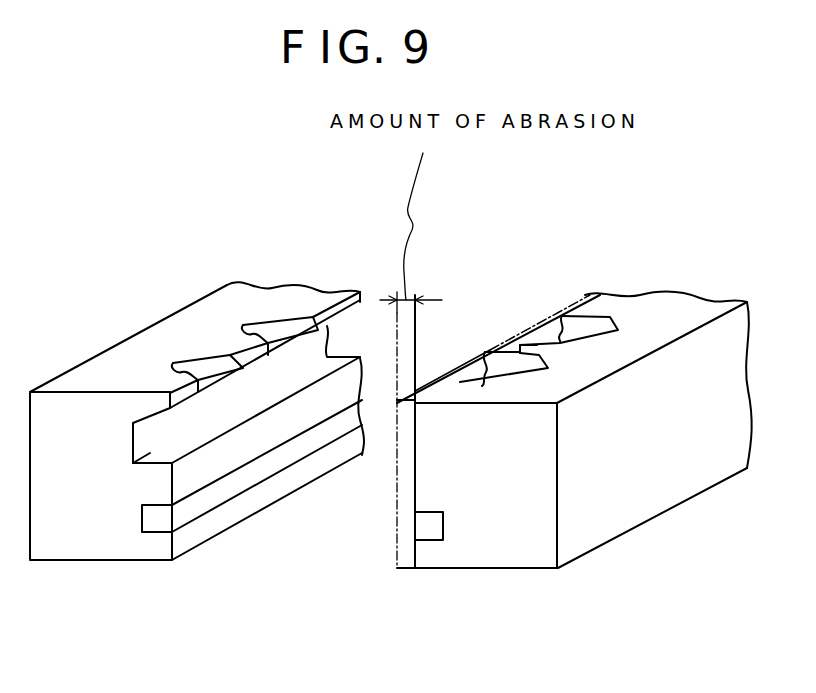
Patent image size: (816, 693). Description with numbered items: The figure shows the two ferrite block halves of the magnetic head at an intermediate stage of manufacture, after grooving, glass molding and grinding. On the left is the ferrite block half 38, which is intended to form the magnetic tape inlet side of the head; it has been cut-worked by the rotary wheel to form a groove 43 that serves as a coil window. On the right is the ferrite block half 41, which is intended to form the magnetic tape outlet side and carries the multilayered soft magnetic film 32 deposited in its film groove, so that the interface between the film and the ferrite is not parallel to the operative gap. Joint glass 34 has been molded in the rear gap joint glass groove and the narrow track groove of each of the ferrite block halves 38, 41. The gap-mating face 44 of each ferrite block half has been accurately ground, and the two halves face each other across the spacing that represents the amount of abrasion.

The multilayered soft magnetic film 32 is at (540, 355).
The joint glass 34 is at (208, 363).
The ferrite block half 38 is at (170, 327).
The ferrite block half 41 is at (673, 312).
The groove serving as a coil window 43 is at (147, 433).
The gap-mating face 44 is at (242, 455).